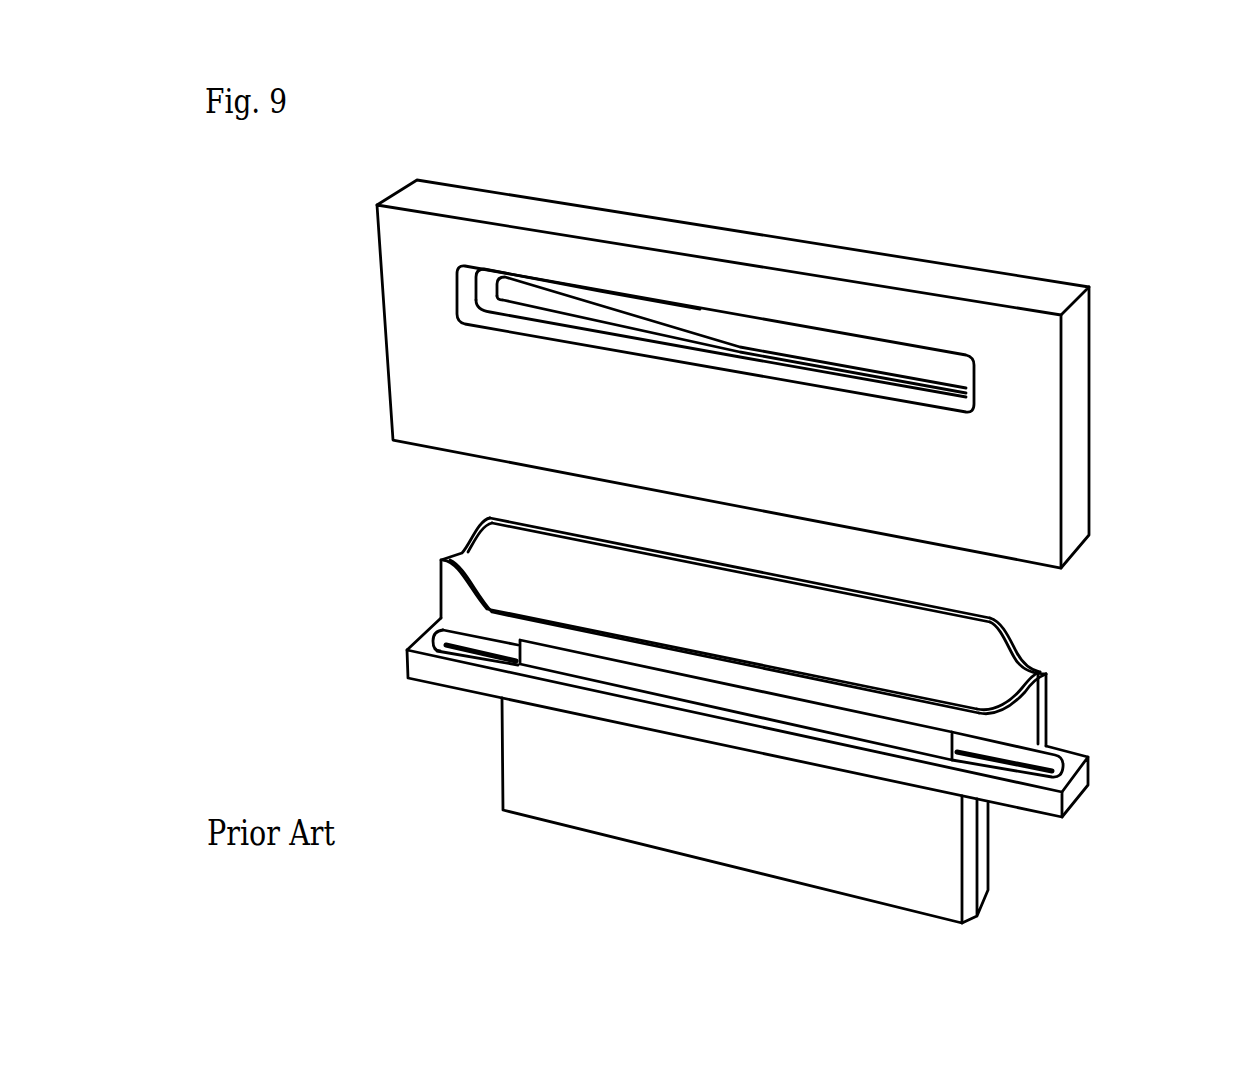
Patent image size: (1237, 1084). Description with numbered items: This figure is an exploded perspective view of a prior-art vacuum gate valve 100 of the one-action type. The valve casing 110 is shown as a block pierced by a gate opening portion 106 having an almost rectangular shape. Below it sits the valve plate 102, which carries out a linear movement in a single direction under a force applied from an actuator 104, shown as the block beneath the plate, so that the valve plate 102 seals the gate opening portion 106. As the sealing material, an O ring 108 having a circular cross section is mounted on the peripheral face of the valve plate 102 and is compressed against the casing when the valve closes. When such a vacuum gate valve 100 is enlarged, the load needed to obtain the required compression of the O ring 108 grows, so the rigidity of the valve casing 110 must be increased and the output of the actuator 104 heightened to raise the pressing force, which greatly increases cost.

The vacuum gate valve 100 is at (1080, 237).
The valve plate 102 is at (982, 667).
The actuator 104 is at (712, 810).
The gate opening portion 106 is at (860, 337).
The O ring 108 is at (990, 615).
The valve casing 110 is at (1042, 390).